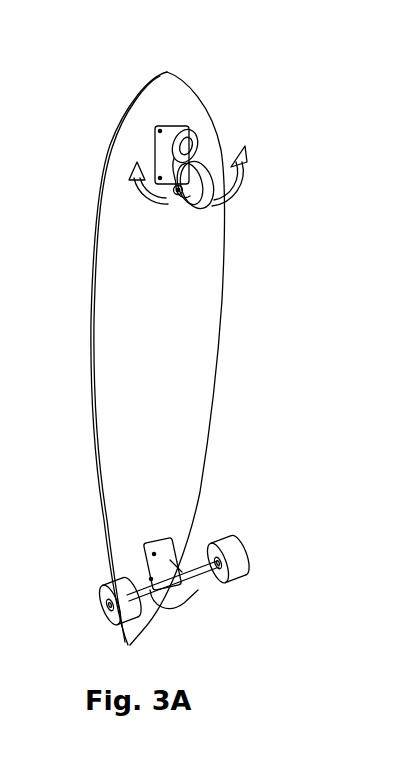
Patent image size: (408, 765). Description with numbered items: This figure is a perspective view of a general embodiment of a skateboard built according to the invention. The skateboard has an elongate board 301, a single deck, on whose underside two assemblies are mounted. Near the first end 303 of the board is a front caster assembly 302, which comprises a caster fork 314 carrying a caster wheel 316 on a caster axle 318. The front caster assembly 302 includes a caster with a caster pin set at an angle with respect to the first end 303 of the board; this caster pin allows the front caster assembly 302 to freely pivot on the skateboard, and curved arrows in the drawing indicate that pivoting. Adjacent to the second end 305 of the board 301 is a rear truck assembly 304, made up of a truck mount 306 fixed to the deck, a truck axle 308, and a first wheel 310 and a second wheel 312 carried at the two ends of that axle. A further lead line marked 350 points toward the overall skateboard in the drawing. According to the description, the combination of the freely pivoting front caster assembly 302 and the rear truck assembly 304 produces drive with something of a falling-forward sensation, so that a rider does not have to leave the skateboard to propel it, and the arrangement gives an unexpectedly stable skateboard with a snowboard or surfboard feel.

The board 301 is at (226, 262).
The front caster assembly 302 is at (233, 137).
The first end 303 is at (200, 281).
The rear truck assembly 304 is at (248, 586).
The second end 305 is at (172, 608).
The truck mount 306 is at (170, 548).
The truck axle 308 is at (205, 580).
The first wheel 310 is at (248, 558).
The second wheel 312 is at (128, 622).
The caster fork 314 is at (222, 148).
The caster wheel 316 is at (207, 190).
The caster axle 318 is at (178, 190).
The skateboard 350 is at (259, 413).